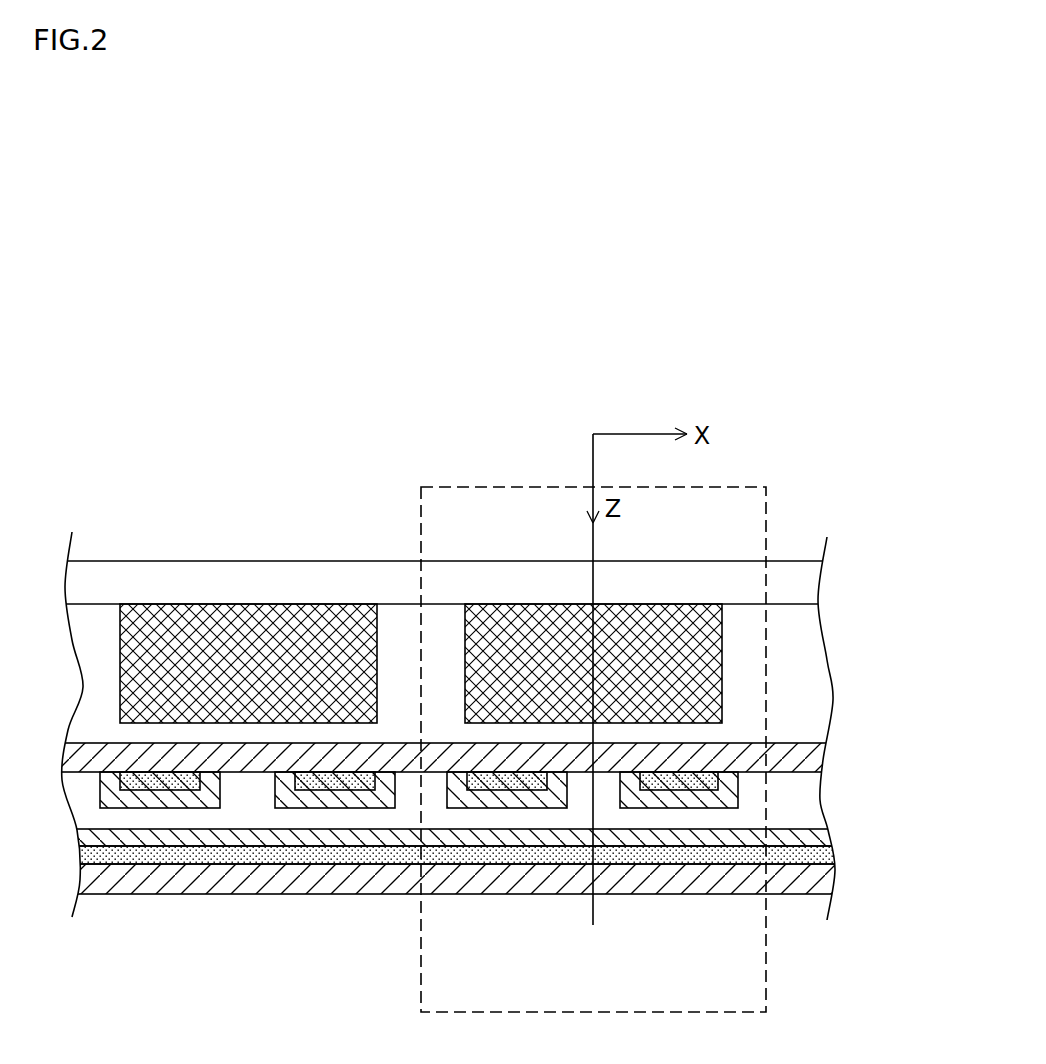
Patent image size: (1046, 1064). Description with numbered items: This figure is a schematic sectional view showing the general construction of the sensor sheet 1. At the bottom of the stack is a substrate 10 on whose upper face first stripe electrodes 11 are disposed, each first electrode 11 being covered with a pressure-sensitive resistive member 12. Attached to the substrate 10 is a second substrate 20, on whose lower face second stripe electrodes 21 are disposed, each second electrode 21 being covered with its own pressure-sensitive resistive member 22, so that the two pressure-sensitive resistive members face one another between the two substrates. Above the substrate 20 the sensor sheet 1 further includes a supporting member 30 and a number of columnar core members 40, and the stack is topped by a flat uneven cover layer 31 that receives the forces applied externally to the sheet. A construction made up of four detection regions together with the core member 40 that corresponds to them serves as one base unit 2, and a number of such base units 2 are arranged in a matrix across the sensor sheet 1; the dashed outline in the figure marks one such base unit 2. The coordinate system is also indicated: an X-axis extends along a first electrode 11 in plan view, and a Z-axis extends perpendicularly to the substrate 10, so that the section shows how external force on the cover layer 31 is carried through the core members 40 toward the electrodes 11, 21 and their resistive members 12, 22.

The sensor sheet 1 is at (823, 370).
The base unit 2 is at (497, 487).
The substrate 10 is at (743, 878).
The first stripe electrodes 11 is at (743, 852).
The pressure-sensitive resistive member 12 is at (747, 833).
The substrate 20 is at (743, 757).
The second stripe electrodes 21 is at (738, 778).
The pressure-sensitive resistive member 22 is at (730, 800).
The supporting member 30 is at (743, 665).
The cover layer 31 is at (743, 583).
The columnar core members 40 is at (663, 627).